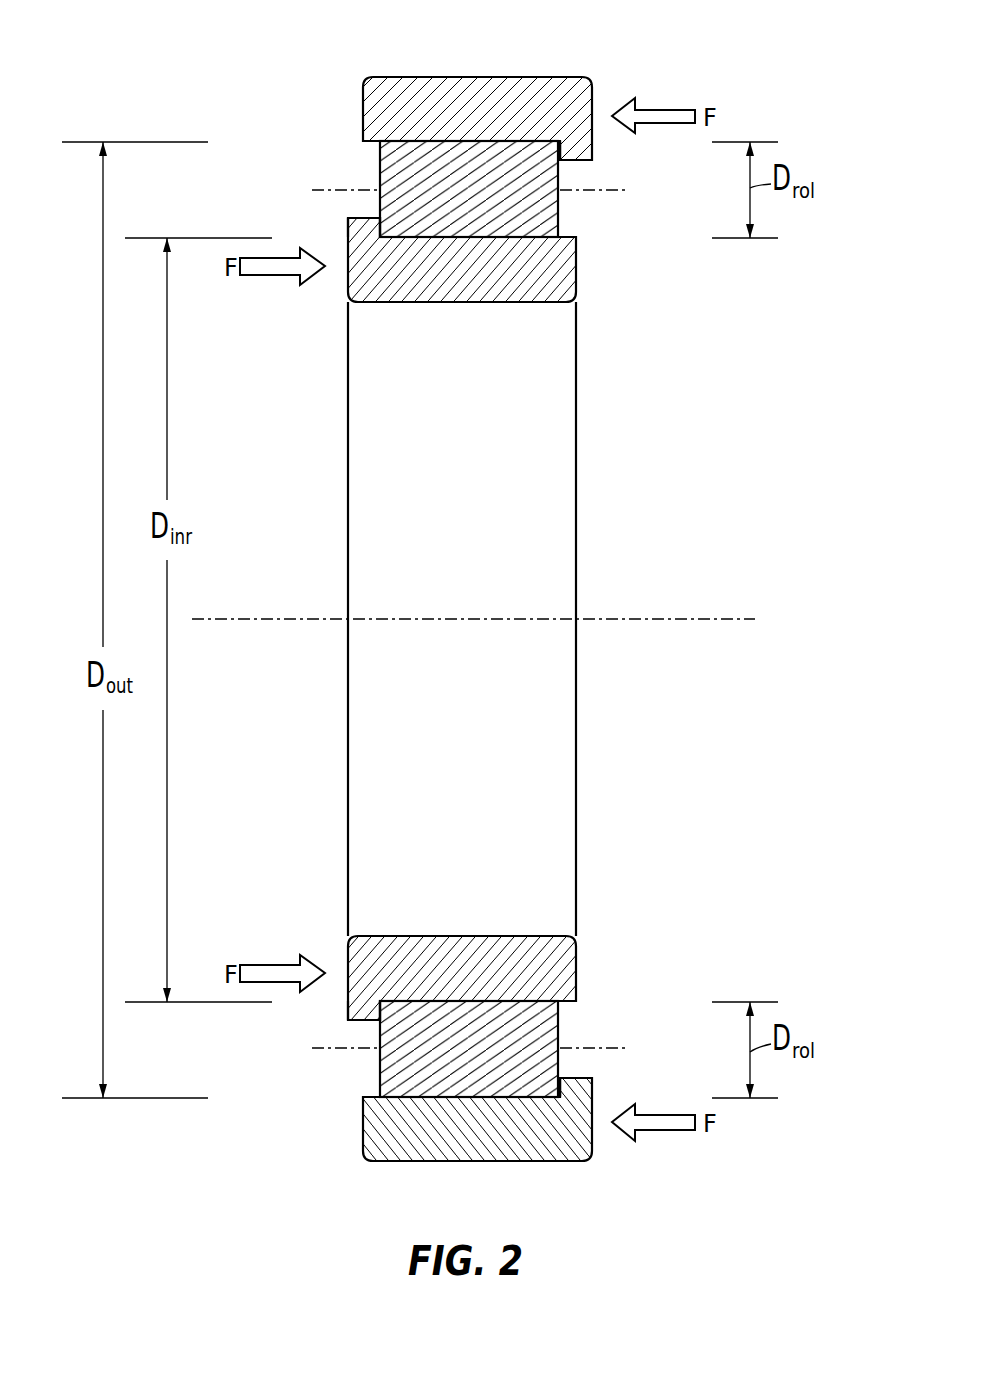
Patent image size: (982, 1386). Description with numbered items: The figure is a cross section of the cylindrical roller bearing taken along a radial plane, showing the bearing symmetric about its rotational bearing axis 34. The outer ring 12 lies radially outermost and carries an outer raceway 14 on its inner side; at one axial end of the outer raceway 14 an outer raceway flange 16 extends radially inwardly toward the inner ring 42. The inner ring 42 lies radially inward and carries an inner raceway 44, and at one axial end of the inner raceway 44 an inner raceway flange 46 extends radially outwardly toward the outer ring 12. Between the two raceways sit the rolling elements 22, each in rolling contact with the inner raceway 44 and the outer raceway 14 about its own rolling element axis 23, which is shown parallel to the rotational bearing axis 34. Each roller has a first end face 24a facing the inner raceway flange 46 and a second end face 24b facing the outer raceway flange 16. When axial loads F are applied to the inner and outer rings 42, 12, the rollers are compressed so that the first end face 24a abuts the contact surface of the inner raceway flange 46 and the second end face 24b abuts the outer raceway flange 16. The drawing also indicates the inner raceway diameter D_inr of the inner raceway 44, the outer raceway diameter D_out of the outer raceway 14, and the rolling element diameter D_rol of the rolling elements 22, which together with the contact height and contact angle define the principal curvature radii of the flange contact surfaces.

The outer ring 12 is at (557, 75).
The outer raceway 14 is at (447, 138).
The outer raceway flange 16 is at (593, 152).
The rolling elements 22 is at (402, 168).
The rolling element axis 23 is at (595, 192).
The first end face 24a is at (345, 237).
The second end face 24b is at (560, 143).
The rotational bearing axis 34 is at (677, 617).
The inner ring 42 is at (578, 273).
The inner raceway 44 is at (470, 240).
The inner raceway flange 46 is at (347, 228).